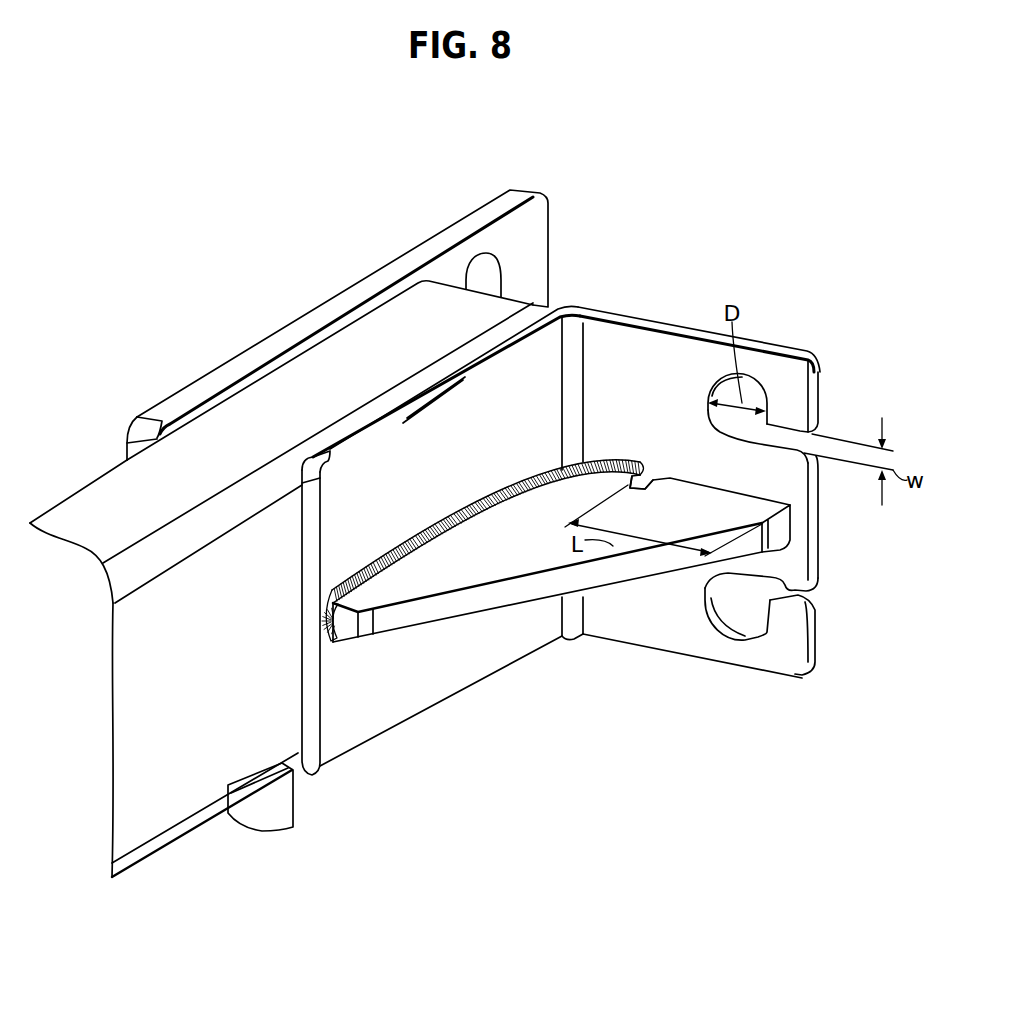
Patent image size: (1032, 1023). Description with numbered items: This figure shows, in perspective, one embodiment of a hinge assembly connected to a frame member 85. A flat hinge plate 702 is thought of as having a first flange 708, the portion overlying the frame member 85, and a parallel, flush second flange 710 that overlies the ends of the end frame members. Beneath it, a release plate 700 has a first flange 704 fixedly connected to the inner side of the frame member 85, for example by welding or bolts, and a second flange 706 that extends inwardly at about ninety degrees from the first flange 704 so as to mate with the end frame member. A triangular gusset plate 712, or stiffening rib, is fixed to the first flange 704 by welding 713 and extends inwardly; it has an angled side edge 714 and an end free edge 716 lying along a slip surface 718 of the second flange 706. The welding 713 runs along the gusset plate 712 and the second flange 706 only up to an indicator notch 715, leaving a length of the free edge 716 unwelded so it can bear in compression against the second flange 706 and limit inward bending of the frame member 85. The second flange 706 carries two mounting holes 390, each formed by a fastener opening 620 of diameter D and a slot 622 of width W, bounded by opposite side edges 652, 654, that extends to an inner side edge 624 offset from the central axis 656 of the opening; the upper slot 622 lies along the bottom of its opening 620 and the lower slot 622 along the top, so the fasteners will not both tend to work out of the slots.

The frame member 85 is at (103, 490).
The mounting hole 390 is at (797, 373).
The fastener opening 620 is at (727, 387).
The slot 622 is at (812, 438).
The inner side edge 624 is at (819, 528).
The side edge 652 is at (819, 368).
The side edge 654 is at (787, 447).
The central axis 656 is at (730, 620).
The release plate 700 is at (365, 732).
The hinge plate 702 is at (260, 343).
The first flange 704 is at (327, 717).
The second flange 706 is at (620, 334).
The first flange 708 is at (170, 403).
The second flange 710 is at (470, 218).
The gusset plate 712 is at (428, 590).
The welding 713 is at (433, 530).
The angled side edge 714 is at (598, 452).
The indicator notch 715 is at (652, 473).
The end free edge 716 is at (690, 490).
The slip surface 718 is at (660, 353).